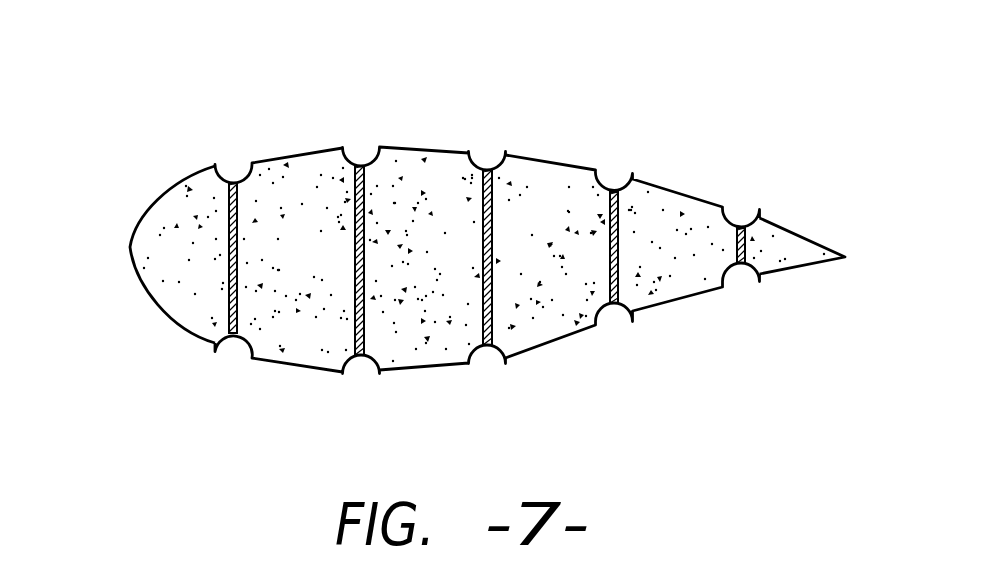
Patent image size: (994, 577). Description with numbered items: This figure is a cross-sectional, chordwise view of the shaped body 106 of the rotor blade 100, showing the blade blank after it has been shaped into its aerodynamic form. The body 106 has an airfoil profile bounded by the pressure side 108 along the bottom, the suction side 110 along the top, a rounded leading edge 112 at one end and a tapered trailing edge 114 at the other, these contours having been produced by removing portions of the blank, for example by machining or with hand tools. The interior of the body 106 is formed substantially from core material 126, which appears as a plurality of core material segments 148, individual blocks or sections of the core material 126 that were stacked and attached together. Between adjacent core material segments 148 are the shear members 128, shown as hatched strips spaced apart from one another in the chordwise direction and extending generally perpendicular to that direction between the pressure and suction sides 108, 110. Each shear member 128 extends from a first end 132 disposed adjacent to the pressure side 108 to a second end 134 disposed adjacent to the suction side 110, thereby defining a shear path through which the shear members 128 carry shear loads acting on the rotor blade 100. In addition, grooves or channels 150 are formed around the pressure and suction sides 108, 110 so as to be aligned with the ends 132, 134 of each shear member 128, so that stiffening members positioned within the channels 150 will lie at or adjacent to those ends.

The rotor blade 100 is at (624, 103).
The body 106 is at (692, 200).
The pressure side 108 is at (425, 371).
The suction side 110 is at (445, 148).
The leading edge 112 is at (127, 246).
The trailing edge 114 is at (850, 257).
The core material 126 is at (270, 332).
The core material segments 148 is at (563, 312).
The shear members 128 is at (354, 200).
The first end 132 is at (228, 327).
The second end 134 is at (228, 206).
The channels 150 is at (356, 150).